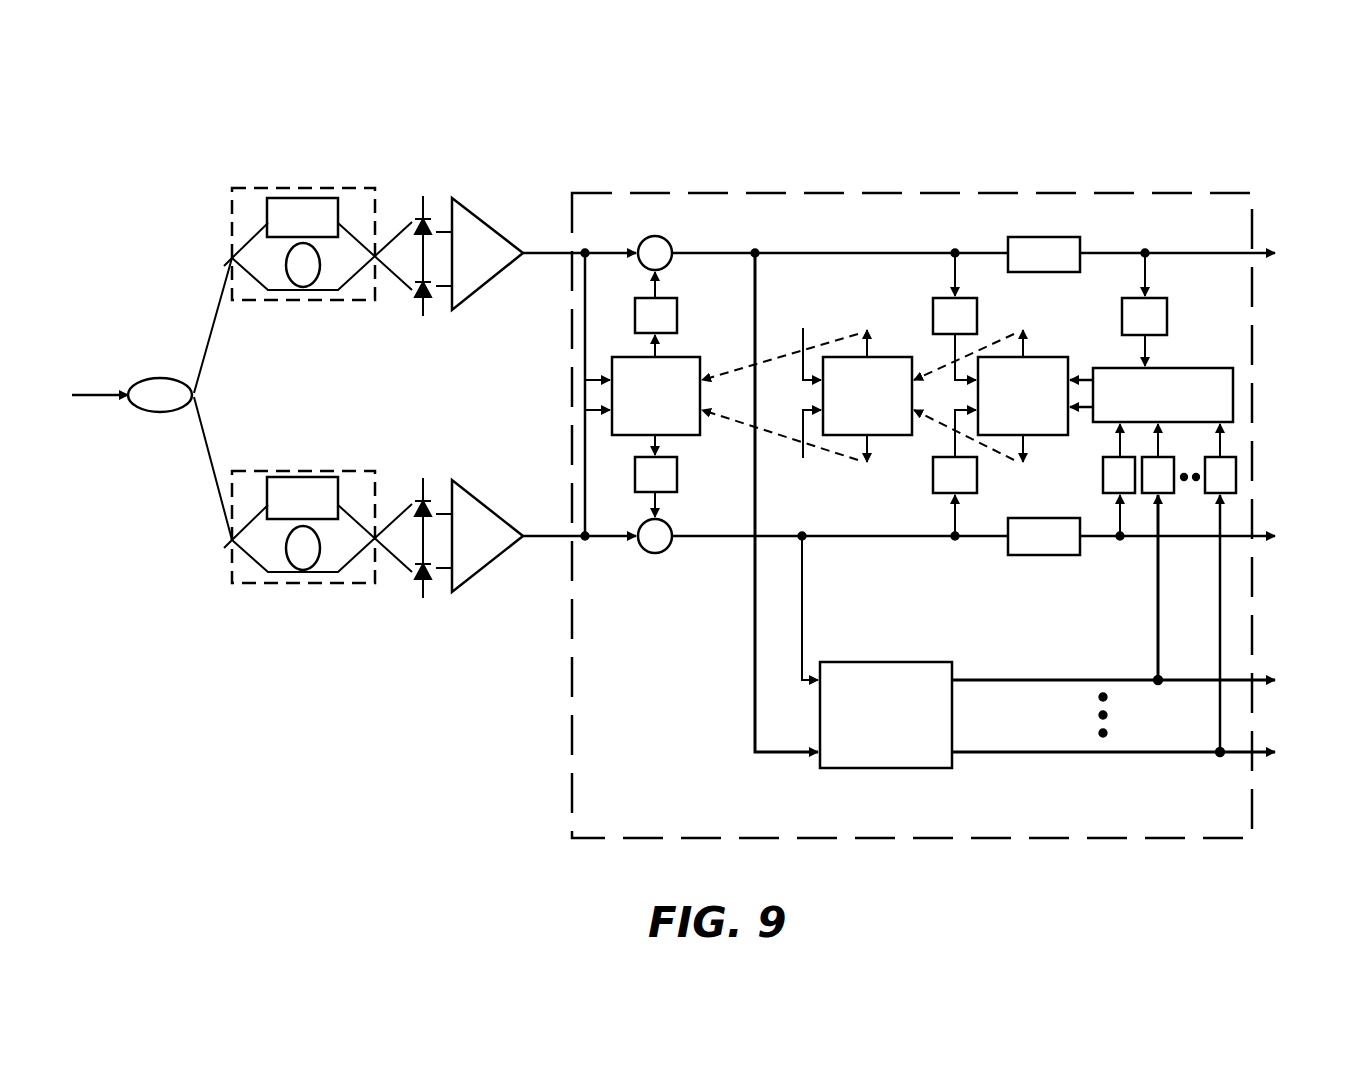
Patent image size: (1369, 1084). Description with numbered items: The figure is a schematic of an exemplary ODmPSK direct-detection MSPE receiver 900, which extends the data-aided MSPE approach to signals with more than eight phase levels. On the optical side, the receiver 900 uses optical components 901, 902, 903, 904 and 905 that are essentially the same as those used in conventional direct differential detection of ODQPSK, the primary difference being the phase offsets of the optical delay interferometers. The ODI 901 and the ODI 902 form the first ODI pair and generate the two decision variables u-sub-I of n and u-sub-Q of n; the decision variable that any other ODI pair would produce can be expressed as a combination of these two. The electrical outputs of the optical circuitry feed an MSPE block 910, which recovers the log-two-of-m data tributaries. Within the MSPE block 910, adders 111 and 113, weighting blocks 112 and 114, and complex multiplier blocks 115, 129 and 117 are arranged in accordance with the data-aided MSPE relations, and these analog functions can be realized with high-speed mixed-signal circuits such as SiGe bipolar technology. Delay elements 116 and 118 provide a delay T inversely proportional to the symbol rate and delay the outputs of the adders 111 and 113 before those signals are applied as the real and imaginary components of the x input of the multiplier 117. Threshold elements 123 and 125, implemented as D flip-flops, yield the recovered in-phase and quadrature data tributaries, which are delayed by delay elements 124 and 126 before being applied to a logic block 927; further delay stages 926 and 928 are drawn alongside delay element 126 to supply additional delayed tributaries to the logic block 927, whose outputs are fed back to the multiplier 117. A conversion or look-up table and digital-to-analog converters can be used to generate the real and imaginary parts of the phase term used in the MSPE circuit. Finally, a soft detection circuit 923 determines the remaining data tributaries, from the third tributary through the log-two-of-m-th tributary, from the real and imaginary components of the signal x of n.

The receiver 900 is at (691, 69).
The optical delay interferometer (ODI) 901 is at (327, 188).
The optical delay interferometer (ODI) 902 is at (327, 471).
The optical component 903 is at (462, 201).
The optical component 904 is at (462, 483).
The optical component 905 is at (150, 413).
The MSPE block 910 is at (805, 193).
The adder 111 is at (668, 242).
The weighting block 112 is at (677, 312).
The adder 113 is at (668, 548).
The weighting block 114 is at (677, 480).
The complex multiplier block 115 is at (696, 357).
The delay element 116 is at (933, 310).
The complex multiplier block 117 is at (1048, 357).
The delay element 118 is at (933, 478).
The threshold element (D-FF) 123 is at (1012, 237).
The delay element 124 is at (1167, 316).
The threshold element (D-FF) 125 is at (1045, 555).
The delay element 126 is at (1103, 478).
The complex multiplier block 129 is at (890, 357).
The soft detection circuit 923 is at (893, 662).
The delay element T 926 is at (1166, 493).
The decision logic block 927 is at (1175, 368).
The delay element T 928 is at (1236, 476).